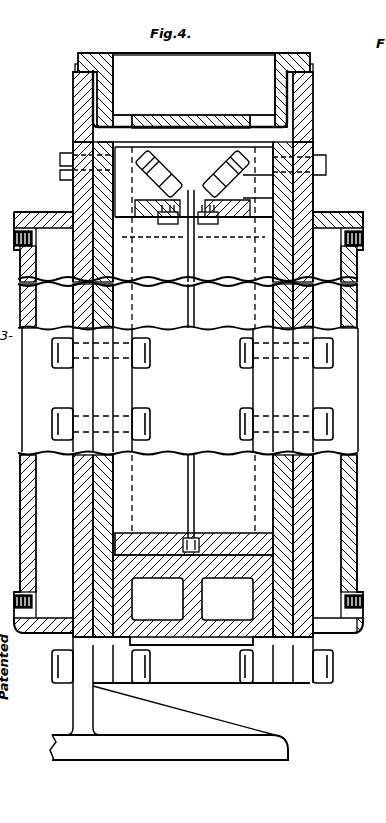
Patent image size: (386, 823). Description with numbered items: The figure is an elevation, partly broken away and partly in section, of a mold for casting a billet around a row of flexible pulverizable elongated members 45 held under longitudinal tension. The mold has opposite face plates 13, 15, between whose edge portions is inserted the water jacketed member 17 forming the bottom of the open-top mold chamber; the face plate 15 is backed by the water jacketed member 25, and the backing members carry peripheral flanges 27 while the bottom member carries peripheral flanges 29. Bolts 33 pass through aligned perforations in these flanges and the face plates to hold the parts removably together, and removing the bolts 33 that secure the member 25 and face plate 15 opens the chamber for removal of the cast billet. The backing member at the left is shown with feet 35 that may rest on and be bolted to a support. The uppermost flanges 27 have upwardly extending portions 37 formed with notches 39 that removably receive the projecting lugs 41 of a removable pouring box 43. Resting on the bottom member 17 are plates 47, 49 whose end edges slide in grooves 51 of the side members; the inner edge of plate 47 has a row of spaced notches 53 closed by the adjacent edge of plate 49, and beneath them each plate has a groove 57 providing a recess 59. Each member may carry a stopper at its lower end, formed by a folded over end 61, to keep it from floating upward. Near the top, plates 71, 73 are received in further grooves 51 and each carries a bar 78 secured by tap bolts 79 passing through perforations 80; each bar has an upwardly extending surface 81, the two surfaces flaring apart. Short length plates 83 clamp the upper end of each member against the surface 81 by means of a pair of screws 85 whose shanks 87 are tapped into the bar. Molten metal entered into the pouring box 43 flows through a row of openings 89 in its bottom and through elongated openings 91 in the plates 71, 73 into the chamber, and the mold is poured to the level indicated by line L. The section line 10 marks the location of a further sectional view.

The section line 10 is at (178, 470).
The face plate 13 is at (105, 355).
The face plate 15 is at (278, 305).
The water jacketed member 17 is at (182, 683).
The water jacketed member 25 is at (362, 436).
The peripheral flanges 27 is at (78, 190).
The peripheral flanges 29 is at (137, 385).
The bolts 33 is at (68, 154).
The feet 35 is at (262, 752).
The upwardly extending portions 37 is at (75, 98).
The notches 39 is at (78, 70).
The lugs 41 is at (89, 57).
The pouring box 43 is at (116, 88).
The flexible pulverizable elongated members 45 is at (150, 160).
The plate 47 is at (137, 545).
The plate 49 is at (262, 545).
The grooves 51 is at (313, 190).
The notches 53 is at (178, 535).
The groove 57 is at (180, 560).
The recess 59 is at (166, 601).
The folded over end 61 is at (200, 540).
The plate 71 is at (125, 205).
The plate 73 is at (280, 218).
The bar 78 is at (255, 160).
The tap bolts 79 is at (170, 256).
The perforations 80 is at (194, 230).
The upwardly extending surface 81 is at (70, 160).
The short length plates 83 is at (168, 147).
The screws 85 is at (194, 173).
The shanks 87 is at (70, 173).
The openings 89 is at (129, 120).
The elongated openings 91 is at (246, 218).